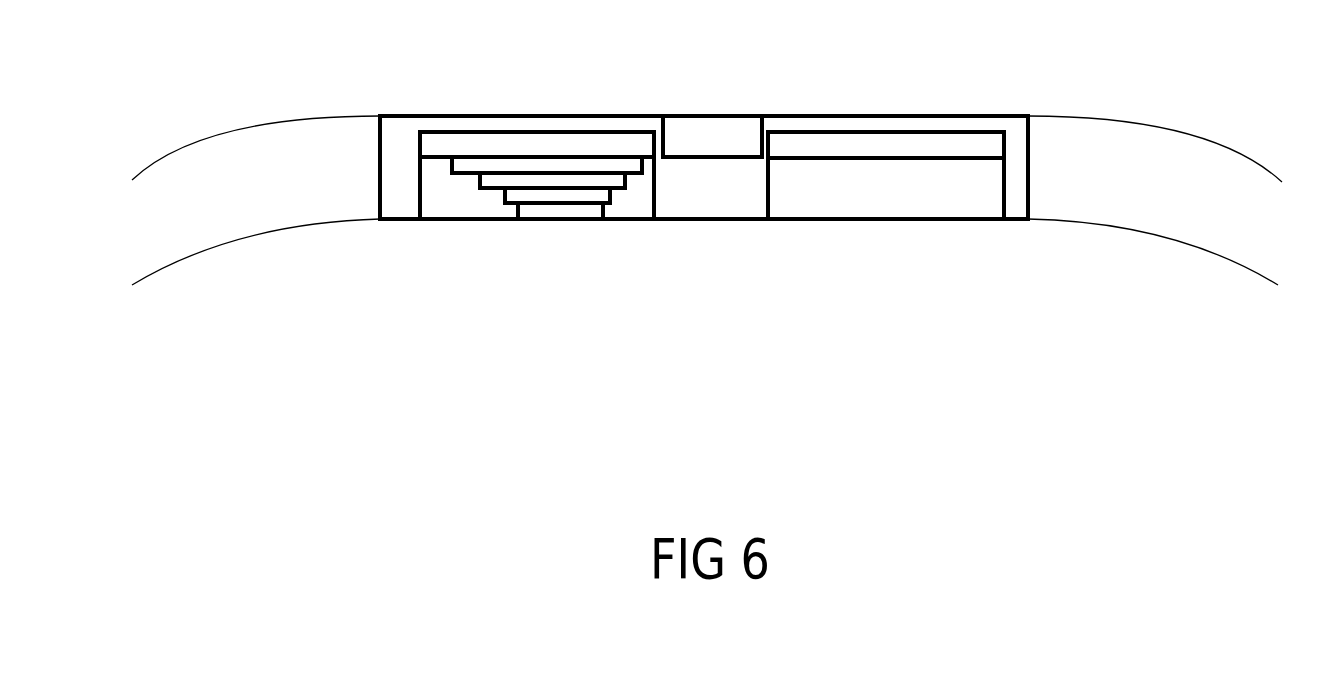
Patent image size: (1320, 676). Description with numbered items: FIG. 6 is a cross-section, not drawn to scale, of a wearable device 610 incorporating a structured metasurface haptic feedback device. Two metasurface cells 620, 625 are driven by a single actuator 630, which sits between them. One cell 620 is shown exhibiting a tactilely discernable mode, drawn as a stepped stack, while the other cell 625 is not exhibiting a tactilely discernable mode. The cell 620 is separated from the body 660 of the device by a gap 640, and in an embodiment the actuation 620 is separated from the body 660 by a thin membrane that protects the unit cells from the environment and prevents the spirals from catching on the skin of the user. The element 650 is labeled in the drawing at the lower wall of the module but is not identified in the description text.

The wearable device 610 is at (1092, 148).
The cell 620 is at (555, 204).
The cell 625 is at (860, 150).
The actuator 630 is at (730, 130).
The gap 640 is at (904, 235).
The substrate 650 is at (704, 227).
The body 660 is at (740, 228).